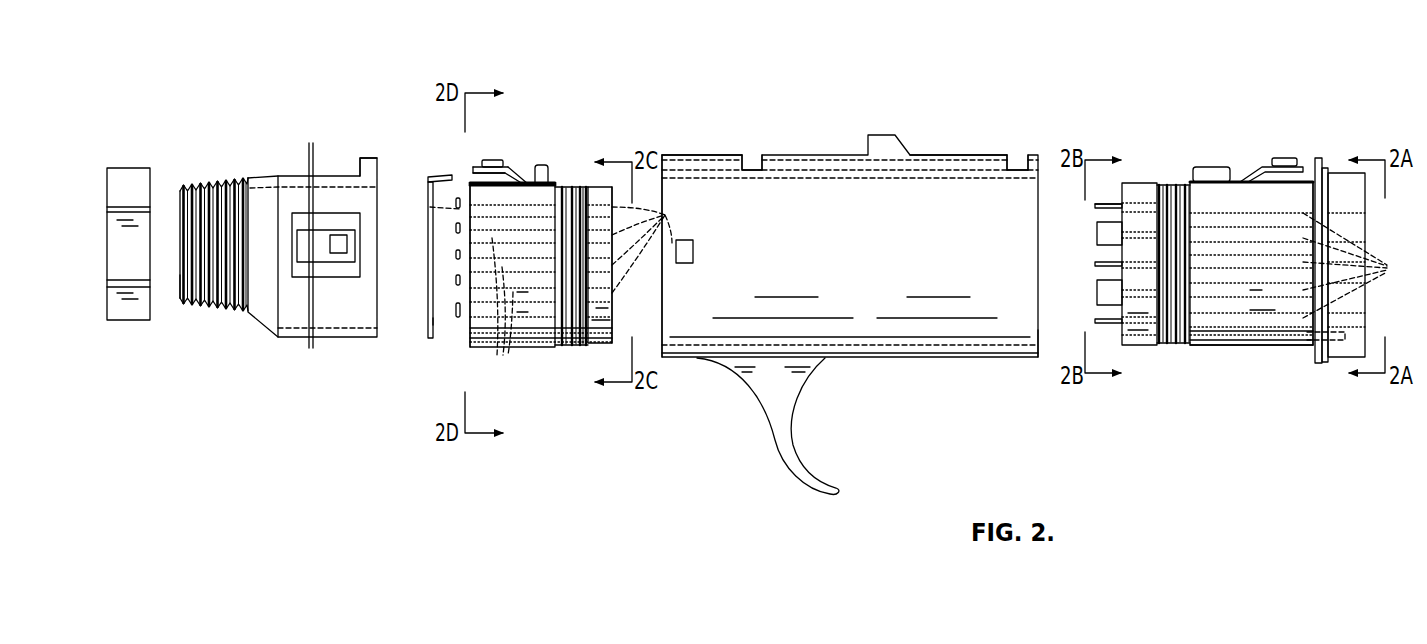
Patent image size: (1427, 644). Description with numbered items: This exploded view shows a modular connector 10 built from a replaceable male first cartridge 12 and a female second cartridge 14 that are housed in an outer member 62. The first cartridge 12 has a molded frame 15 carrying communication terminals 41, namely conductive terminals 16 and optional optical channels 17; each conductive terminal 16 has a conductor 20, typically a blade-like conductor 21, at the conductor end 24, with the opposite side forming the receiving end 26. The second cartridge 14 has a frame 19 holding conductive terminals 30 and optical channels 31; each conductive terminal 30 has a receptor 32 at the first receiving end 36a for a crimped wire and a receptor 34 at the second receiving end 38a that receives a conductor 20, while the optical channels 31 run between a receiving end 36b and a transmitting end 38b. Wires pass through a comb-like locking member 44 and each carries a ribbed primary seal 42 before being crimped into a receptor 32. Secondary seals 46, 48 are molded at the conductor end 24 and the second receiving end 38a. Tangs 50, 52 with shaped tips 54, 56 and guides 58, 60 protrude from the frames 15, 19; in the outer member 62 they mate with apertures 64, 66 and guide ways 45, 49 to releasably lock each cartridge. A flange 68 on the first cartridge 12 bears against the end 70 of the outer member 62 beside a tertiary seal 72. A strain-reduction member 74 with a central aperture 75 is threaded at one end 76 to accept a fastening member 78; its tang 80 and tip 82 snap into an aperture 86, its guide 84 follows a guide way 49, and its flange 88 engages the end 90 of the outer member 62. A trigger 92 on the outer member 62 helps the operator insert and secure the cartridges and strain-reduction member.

The modular connector 10 is at (855, 68).
The first cartridge 12 is at (1248, 355).
The second cartridge 14 is at (530, 360).
The frame 15 is at (1230, 347).
The conductive terminal 16 is at (1248, 211).
The optical channel 17 is at (1290, 320).
The frame 19 is at (555, 184).
The conductor 20 is at (1092, 205).
The blade-like conductor 21 is at (1095, 321).
The conductor end 24 is at (1140, 176).
The receiving end 26 is at (1365, 236).
The conductive terminal 30 is at (501, 312).
The optical channel 31 is at (430, 207).
The receptor 32 is at (470, 295).
The receptor 34 is at (652, 248).
The first receiving end 36a is at (470, 187).
The receiving end 36b is at (428, 180).
The second receiving end 38a is at (604, 343).
The transmitting end 38b is at (612, 338).
The communication terminals 41 is at (1355, 276).
The primary seal 42 is at (458, 318).
The locking member 44 is at (428, 182).
The guide way 45 is at (957, 160).
The secondary seal 46 is at (1168, 348).
The secondary seal 48 is at (571, 347).
The guide way 49 is at (668, 160).
The tang 50 is at (1270, 160).
The tang 52 is at (518, 176).
The tip 54 is at (1285, 158).
The tip 56 is at (492, 160).
The guide 58 is at (1210, 167).
The guide 60 is at (545, 166).
The outer member 62 is at (905, 318).
The aperture 64 is at (1017, 160).
The aperture 66 is at (750, 160).
The flange 68 is at (1320, 162).
The end 70 is at (1042, 353).
The tertiary seal 72 is at (1327, 362).
The strain-reduction member 74 is at (307, 317).
The central aperture 75 is at (180, 282).
The threaded end 76 is at (217, 183).
The fastening member 78 is at (120, 170).
The tang 80 is at (317, 253).
The tip 82 is at (348, 250).
The guide 84 is at (365, 158).
The aperture 86 is at (693, 252).
The flange 88 is at (311, 143).
The end 90 is at (662, 155).
The trigger 92 is at (798, 477).